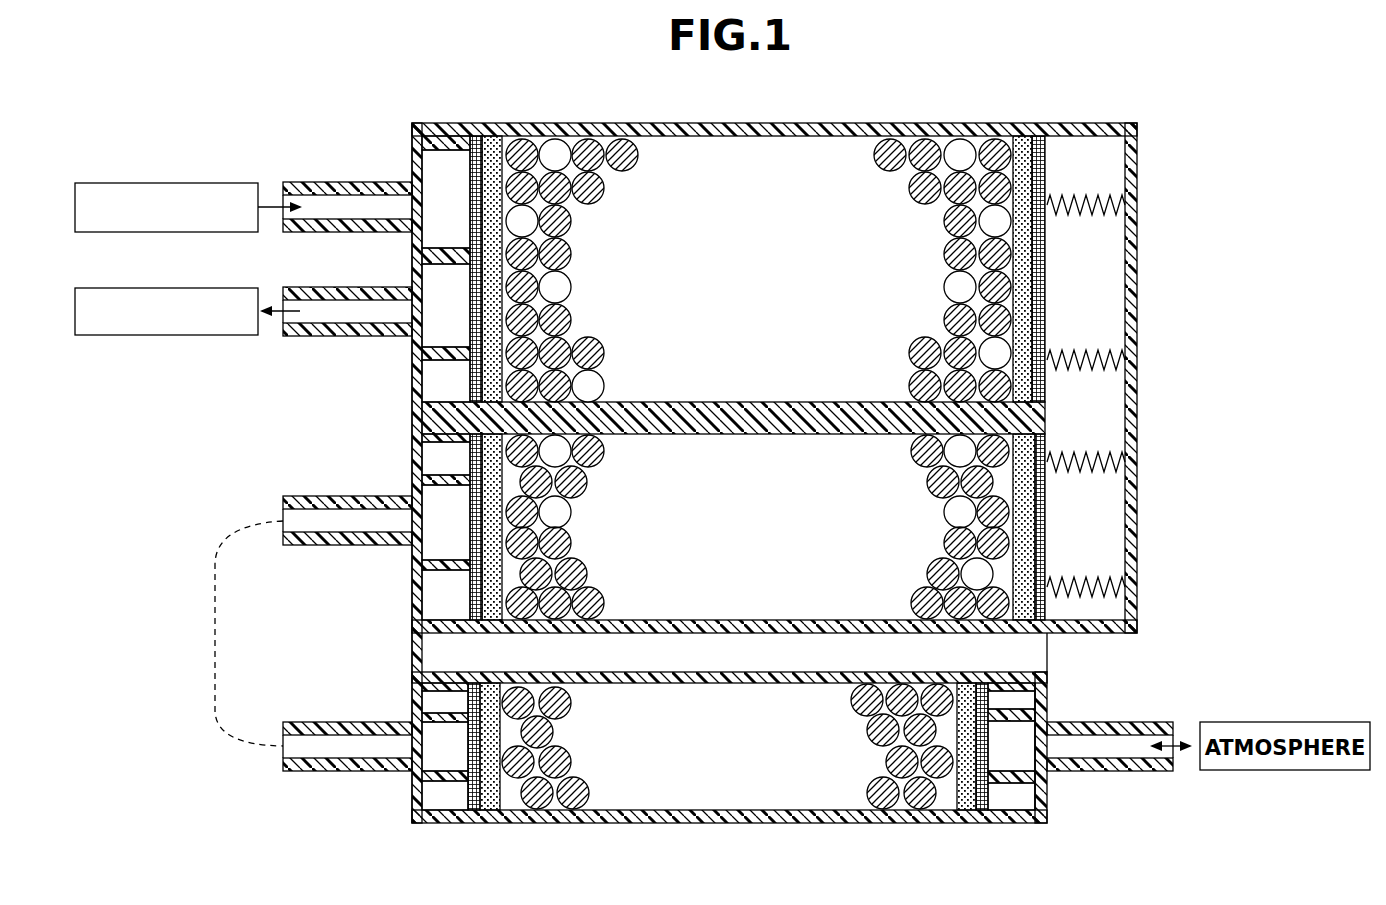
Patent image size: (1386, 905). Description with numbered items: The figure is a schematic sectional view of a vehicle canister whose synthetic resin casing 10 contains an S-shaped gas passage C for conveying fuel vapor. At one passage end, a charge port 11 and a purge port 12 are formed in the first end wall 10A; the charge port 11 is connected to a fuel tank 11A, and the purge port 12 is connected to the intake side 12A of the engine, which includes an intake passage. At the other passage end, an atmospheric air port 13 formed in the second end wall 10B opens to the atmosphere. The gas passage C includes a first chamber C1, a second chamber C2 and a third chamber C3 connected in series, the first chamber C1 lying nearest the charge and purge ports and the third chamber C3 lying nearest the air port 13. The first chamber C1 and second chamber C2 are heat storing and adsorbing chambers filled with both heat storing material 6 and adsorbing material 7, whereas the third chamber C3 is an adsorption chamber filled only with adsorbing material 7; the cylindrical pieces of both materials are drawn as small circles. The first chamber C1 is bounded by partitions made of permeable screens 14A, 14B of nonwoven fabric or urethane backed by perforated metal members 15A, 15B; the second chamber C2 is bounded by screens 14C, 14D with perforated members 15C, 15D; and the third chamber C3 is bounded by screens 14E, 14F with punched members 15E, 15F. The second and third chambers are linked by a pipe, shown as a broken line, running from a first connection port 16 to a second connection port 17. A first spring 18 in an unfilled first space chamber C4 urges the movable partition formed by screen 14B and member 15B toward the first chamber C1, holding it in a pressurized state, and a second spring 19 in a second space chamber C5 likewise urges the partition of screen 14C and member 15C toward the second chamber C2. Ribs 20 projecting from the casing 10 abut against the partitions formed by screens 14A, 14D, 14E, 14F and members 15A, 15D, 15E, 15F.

The casing 10 is at (851, 120).
The first end wall 10A is at (412, 160).
The second end wall 10B is at (1047, 697).
The charge port 11 is at (325, 184).
The fuel tank 11A is at (196, 187).
The purge port 12 is at (332, 334).
The intake side 12A is at (196, 290).
The atmospheric air port 13 is at (1136, 768).
The permeable screen 14A is at (492, 148).
The permeable screen 14B is at (1022, 148).
The permeable screen 14C is at (1024, 498).
The permeable screen 14D is at (492, 456).
The permeable screen 14E is at (490, 800).
The permeable screen 14F is at (966, 805).
The perforated metal member 15A is at (476, 148).
The perforated metal member 15B is at (1038, 148).
The perforated metal member 15C is at (1040, 545).
The perforated metal member 15D is at (476, 492).
The punched metal member 15E is at (474, 800).
The punched metal member 15F is at (983, 800).
The first connection port 16 is at (325, 545).
The second connection port 17 is at (345, 770).
The first spring 18 is at (1097, 200).
The second spring 19 is at (1097, 462).
The ribs 20 is at (452, 168).
The heat storing material 6 is at (557, 148).
The adsorbing material 7 is at (624, 148).
The gas passage C is at (738, 170).
The first chamber C1 is at (757, 269).
The second chamber C2 is at (757, 527).
The third chamber C3 is at (728, 746).
The first space chamber C4 is at (1100, 282).
The second space chamber C5 is at (1100, 521).